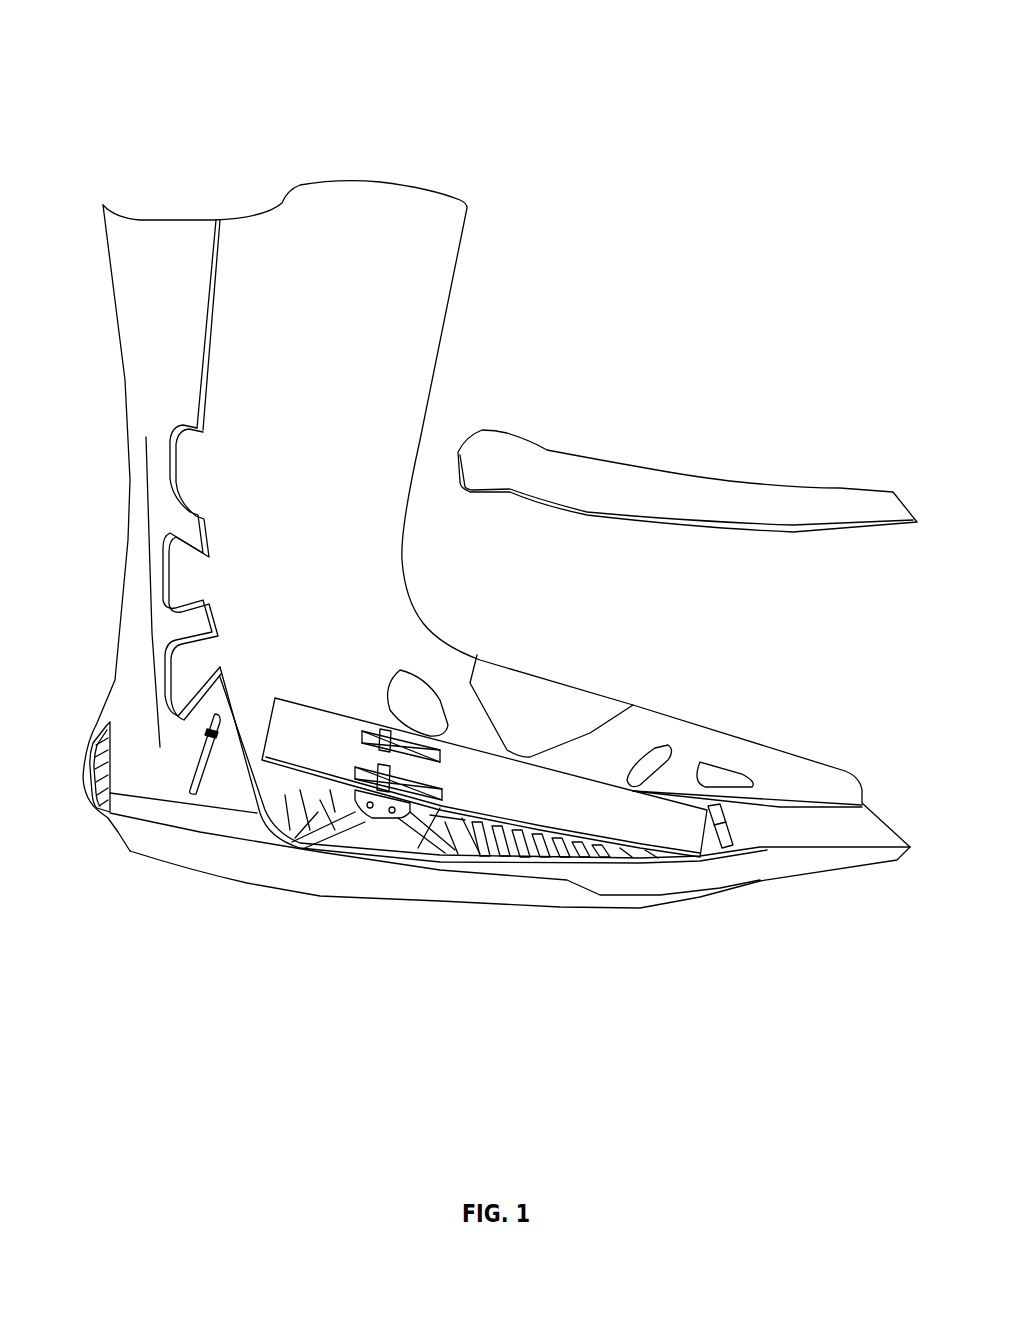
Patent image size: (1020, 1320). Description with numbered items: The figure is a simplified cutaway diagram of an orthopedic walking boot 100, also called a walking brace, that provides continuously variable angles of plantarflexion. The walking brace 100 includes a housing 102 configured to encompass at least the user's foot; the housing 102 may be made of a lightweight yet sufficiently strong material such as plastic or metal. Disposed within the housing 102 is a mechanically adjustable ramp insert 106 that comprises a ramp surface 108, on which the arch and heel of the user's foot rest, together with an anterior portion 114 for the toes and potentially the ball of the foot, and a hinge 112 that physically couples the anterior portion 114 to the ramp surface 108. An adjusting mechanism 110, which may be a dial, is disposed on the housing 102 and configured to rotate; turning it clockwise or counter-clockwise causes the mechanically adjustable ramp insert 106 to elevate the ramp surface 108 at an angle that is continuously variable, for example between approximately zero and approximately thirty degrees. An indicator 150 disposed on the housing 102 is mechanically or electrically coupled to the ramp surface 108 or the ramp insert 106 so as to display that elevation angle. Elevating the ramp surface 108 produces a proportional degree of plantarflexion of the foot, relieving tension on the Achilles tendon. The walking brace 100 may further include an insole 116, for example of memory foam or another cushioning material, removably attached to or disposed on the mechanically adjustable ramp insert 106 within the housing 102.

The orthopedic walking boot 100 is at (718, 47).
The housing 102 is at (122, 215).
The mechanically adjustable ramp insert 106 is at (353, 834).
The ramp surface 108 is at (316, 712).
The adjusting mechanism 110 is at (95, 815).
The hinge 112 is at (727, 842).
The anterior portion 114 is at (843, 812).
The insole 116 is at (515, 430).
The indicator 150 is at (176, 740).